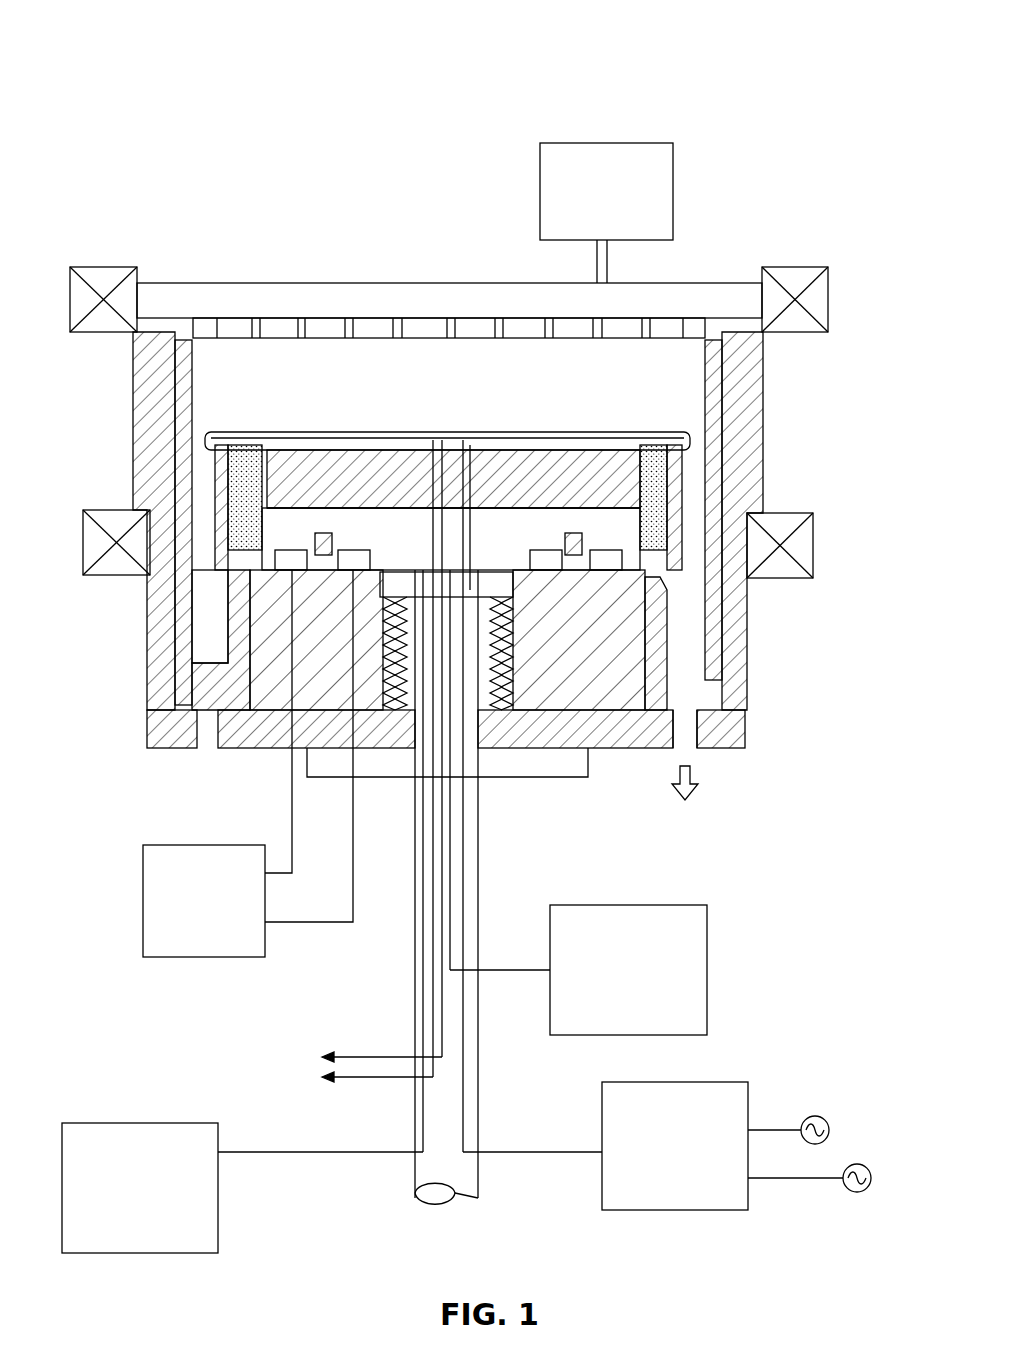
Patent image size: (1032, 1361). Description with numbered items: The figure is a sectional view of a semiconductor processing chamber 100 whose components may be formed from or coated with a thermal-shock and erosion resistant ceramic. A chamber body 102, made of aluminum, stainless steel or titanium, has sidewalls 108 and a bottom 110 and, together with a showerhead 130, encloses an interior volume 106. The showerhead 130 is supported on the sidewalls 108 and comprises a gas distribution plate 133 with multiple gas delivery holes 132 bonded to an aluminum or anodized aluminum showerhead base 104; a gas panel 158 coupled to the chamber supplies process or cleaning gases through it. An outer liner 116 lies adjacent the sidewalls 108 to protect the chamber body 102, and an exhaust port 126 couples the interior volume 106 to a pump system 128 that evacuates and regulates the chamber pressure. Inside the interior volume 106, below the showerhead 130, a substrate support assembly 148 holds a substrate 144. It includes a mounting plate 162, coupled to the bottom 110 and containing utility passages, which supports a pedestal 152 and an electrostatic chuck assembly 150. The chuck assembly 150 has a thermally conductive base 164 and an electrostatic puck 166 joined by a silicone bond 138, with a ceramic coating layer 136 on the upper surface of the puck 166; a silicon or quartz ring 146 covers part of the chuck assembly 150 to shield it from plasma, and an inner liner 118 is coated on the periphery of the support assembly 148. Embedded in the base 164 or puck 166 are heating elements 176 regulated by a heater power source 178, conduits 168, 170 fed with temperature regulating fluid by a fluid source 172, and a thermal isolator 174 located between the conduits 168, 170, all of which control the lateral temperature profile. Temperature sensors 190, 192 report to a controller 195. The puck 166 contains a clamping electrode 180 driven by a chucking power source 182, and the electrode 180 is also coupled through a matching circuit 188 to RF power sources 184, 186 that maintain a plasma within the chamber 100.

The processing chamber 100 is at (782, 74).
The chamber body 102 is at (853, 392).
The showerhead base 104 is at (733, 283).
The interior volume 106 is at (265, 392).
The sidewalls 108 is at (733, 488).
The bottom 110 is at (245, 736).
The outer liner 116 is at (713, 643).
The inner liner 118 is at (658, 683).
The exhaust port 126 is at (700, 730).
The pump system 128 is at (714, 814).
The showerhead 130 is at (291, 290).
The gas delivery holes 132 is at (410, 334).
The gas distribution plate 133 is at (222, 336).
The ceramic coating layer 136 is at (527, 446).
The bond 138 is at (228, 528).
The substrate 144 is at (604, 447).
The ring 146 is at (648, 438).
The substrate support assembly 148 is at (599, 702).
The electrostatic chuck assembly 150 is at (622, 500).
The pedestal 152 is at (382, 946).
The gas panel 158 is at (590, 226).
The mounting plate 162 is at (594, 657).
The thermally conductive base 164 is at (523, 542).
The electrostatic puck 166 is at (603, 489).
The conduit 168 is at (245, 632).
The conduit 170 is at (280, 586).
The fluid source 172 is at (188, 935).
The embedded thermal isolator 174 is at (318, 542).
The embedded heating element 176 is at (278, 490).
The heater power source 178 is at (124, 1234).
The clamping electrode 180 is at (501, 446).
The chucking power source 182 is at (612, 1015).
The RF power source 184 is at (828, 1122).
The RF power source 186 is at (870, 1172).
The matching circuit 188 is at (659, 1186).
The temperature sensor 190 is at (448, 440).
The temperature sensor 192 is at (343, 444).
The controller 195 is at (301, 1068).